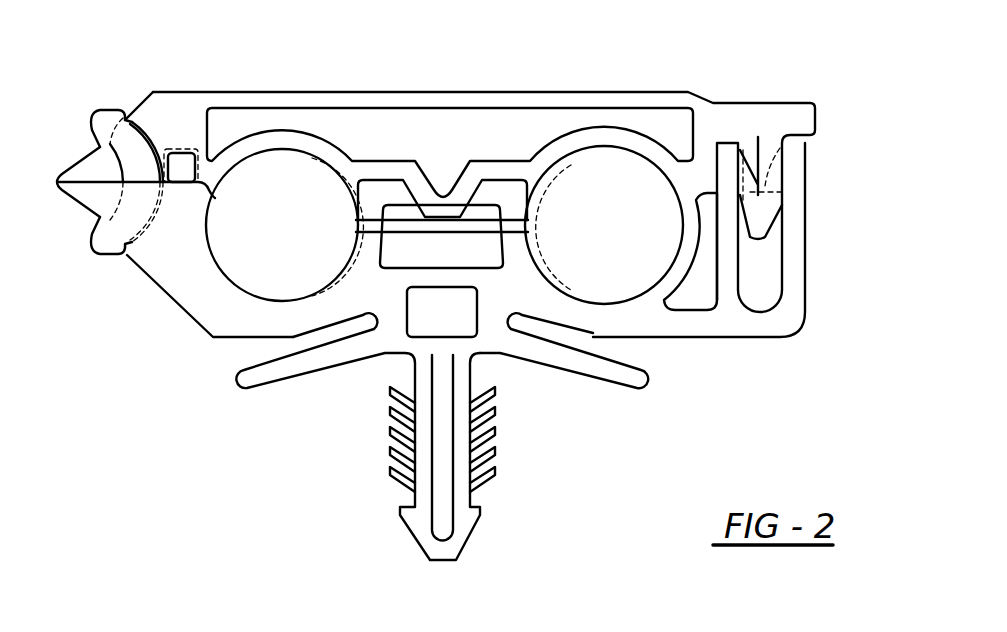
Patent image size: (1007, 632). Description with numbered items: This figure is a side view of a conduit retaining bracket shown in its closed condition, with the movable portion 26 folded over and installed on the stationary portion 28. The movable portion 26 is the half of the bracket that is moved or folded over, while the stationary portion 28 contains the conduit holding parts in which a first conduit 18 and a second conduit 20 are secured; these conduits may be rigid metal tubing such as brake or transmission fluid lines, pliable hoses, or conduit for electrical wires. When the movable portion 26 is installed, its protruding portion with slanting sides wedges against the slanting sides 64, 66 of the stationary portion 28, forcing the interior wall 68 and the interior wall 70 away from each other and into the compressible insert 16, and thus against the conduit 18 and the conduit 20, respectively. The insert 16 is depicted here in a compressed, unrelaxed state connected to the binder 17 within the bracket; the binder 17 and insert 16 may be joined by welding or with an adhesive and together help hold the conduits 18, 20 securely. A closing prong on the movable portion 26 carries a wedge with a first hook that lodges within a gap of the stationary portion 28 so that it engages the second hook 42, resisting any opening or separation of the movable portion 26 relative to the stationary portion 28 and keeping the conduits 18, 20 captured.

The compressible insert 16 is at (352, 207).
The binder 17 is at (463, 233).
The conduit 18 is at (258, 203).
The conduit 20 is at (660, 243).
The movable portion 26 is at (273, 91).
The stationary portion 28 is at (157, 283).
The second hook 42 is at (751, 155).
The slanting side 64 is at (416, 193).
The slanting side 66 is at (453, 191).
The interior wall 68 is at (355, 262).
The interior wall 70 is at (527, 252).